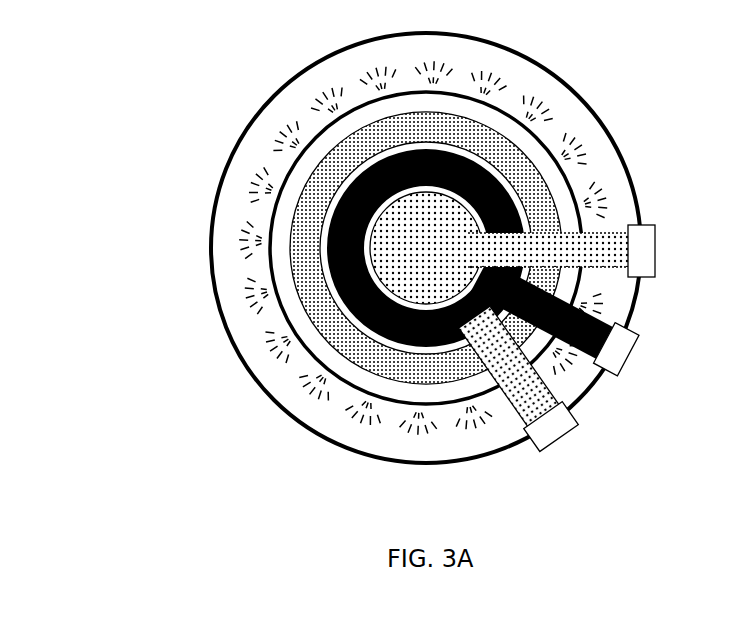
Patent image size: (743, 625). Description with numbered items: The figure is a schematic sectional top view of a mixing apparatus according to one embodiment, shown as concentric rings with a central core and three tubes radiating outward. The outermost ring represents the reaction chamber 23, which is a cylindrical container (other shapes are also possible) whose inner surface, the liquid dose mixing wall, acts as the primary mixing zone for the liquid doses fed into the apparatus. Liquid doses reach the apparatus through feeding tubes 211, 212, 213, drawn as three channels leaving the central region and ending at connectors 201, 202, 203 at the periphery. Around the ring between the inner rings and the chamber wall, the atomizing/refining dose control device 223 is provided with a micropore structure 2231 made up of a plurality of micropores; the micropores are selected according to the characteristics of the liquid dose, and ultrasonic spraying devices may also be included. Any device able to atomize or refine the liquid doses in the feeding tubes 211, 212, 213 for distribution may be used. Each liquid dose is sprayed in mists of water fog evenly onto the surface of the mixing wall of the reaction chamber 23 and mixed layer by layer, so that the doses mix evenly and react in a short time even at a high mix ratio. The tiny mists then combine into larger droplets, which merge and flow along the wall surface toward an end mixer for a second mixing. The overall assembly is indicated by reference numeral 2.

The light source module 2 is at (163, 66).
The reaction chamber 23 is at (212, 291).
The atomizing/refining dose control device 223 is at (350, 368).
The micropore structure 2231 is at (291, 340).
The feeding tube 211 is at (612, 231).
The first connector 201 is at (656, 252).
The feeding tube 212 is at (612, 318).
The second connector 202 is at (638, 340).
The feeding tube 213 is at (518, 447).
The third connector 203 is at (555, 443).